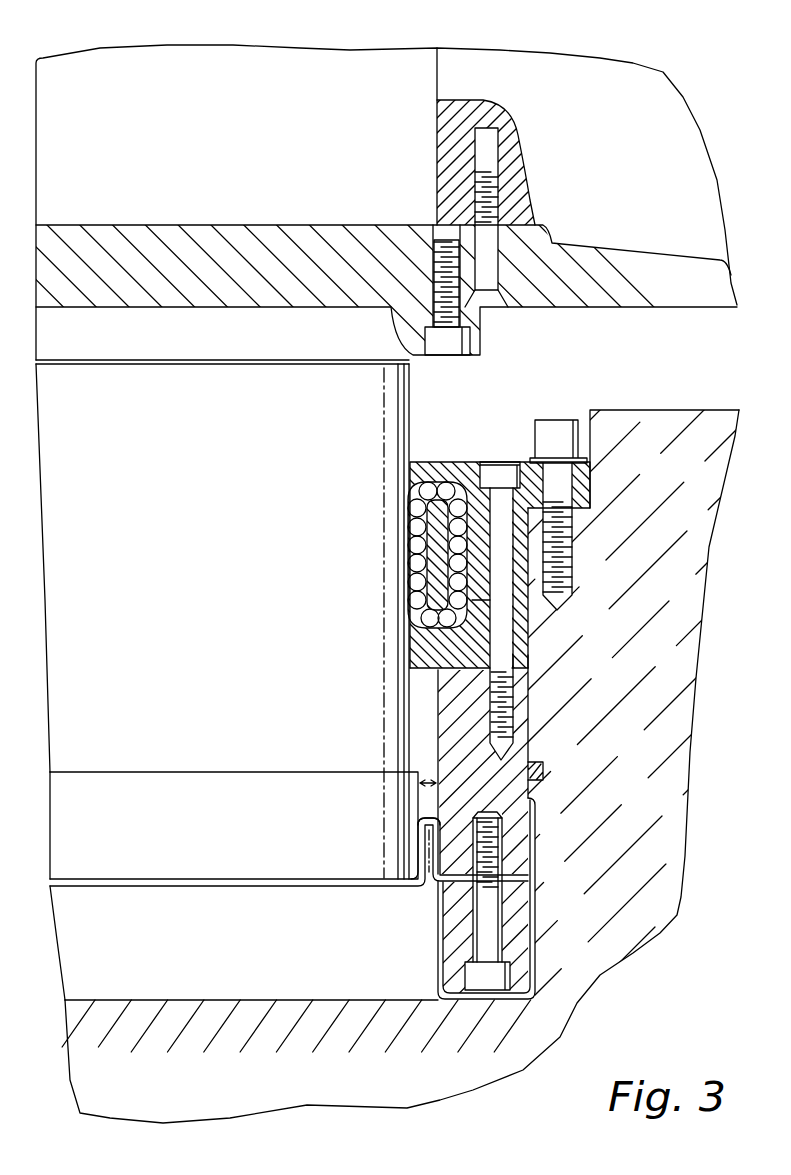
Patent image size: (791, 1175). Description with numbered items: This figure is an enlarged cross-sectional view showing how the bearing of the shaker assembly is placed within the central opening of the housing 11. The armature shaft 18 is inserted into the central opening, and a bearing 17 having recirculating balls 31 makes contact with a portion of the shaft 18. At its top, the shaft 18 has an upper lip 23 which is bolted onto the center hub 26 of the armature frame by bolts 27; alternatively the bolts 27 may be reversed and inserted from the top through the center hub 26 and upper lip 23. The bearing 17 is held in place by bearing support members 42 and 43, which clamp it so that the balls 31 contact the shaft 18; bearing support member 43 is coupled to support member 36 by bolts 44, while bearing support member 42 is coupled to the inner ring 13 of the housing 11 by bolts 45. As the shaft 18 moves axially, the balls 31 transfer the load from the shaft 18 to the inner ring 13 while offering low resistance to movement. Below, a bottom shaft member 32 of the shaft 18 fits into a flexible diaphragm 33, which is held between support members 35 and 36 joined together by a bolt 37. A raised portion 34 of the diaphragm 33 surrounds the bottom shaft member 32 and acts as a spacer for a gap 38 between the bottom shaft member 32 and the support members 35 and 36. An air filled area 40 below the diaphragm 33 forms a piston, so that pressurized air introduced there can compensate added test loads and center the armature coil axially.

The housing 11 is at (666, 830).
The inner ring 13 is at (395, 587).
The bearing 17 is at (392, 549).
The armature shaft 18 is at (222, 619).
The upper lip 23 is at (480, 332).
The center hub 26 is at (341, 236).
The bolts 27 is at (432, 270).
The recirculating balls 31 is at (411, 502).
The bottom shaft member 32 is at (234, 825).
The diaphragm 33 is at (289, 874).
The raised portion 34 is at (432, 817).
The support member 35 is at (530, 928).
The support member 36 is at (513, 797).
The bolt 37 is at (495, 905).
The gap 38 is at (428, 780).
The air filled area 40 is at (290, 969).
The bearing support member 42 is at (528, 470).
The bearing support member 43 is at (523, 663).
The bolts 44 is at (503, 642).
The bolts 45 is at (562, 480).